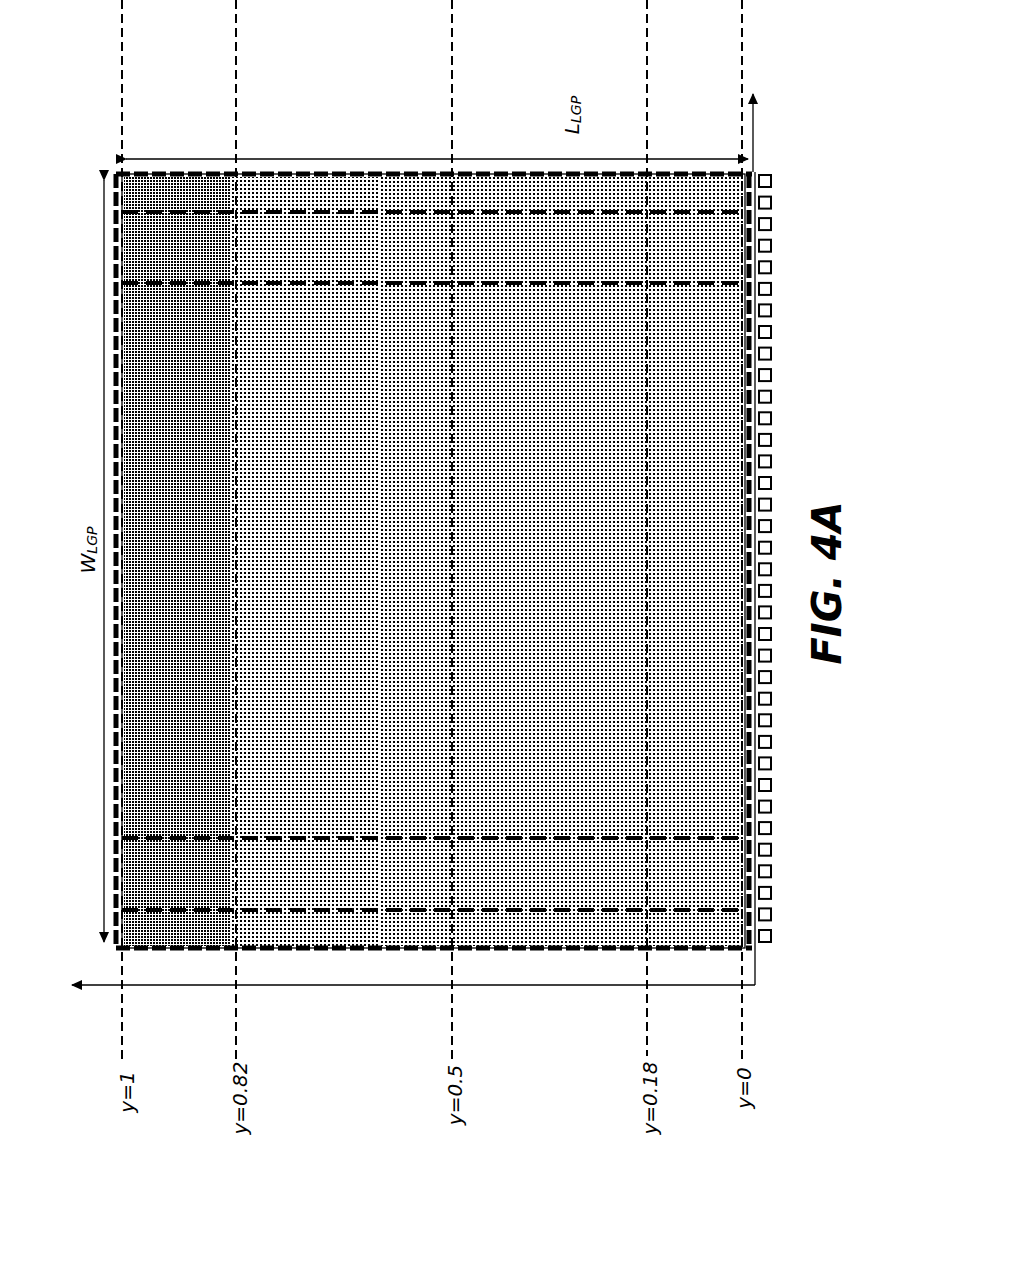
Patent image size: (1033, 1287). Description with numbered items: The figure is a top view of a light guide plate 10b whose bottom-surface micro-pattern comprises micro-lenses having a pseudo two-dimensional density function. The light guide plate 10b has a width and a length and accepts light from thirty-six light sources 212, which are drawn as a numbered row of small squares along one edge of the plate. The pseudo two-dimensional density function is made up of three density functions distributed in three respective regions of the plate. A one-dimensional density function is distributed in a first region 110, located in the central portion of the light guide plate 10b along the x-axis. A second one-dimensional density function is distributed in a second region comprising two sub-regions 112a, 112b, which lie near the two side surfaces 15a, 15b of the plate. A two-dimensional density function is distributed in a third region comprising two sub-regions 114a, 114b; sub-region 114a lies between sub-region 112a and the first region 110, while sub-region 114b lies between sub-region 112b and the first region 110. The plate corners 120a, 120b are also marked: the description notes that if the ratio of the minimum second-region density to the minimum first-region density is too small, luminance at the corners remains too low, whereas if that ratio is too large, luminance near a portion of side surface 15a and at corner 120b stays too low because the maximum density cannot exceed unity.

The light guide plate 10b is at (406, 554).
The side surface 15a is at (360, 953).
The side surface 15b is at (350, 172).
The first region 110 is at (140, 425).
The sub-region of second region 112a is at (137, 940).
The sub-region of second region 112b is at (140, 180).
The sub-region of third region 114a is at (137, 887).
The sub-region of third region 114b is at (140, 272).
The corner 120a is at (727, 933).
The corner 120b is at (172, 936).
The light sources 212 is at (768, 948).